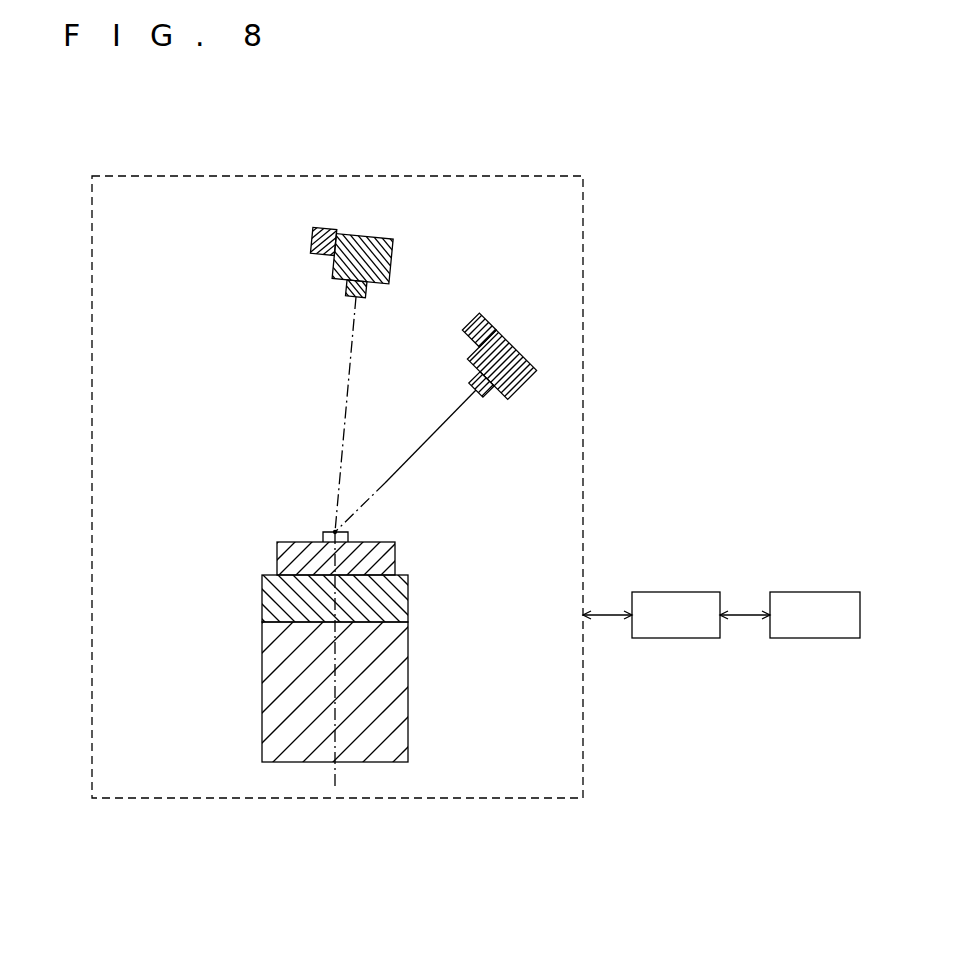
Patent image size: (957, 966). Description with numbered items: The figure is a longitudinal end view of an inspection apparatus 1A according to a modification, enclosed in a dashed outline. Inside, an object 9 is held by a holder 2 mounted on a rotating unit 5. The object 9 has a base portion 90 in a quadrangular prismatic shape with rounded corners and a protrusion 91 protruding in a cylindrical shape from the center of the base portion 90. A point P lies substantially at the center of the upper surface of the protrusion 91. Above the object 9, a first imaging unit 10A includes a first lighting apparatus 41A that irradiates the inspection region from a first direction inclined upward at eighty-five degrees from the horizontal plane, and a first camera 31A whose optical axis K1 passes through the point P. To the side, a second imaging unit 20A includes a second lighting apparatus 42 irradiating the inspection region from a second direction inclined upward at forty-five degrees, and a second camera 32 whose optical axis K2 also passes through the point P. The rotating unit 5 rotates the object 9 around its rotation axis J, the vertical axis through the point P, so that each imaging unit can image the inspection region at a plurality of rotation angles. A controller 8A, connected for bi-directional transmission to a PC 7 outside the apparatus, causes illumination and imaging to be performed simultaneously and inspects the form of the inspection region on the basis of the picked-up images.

The inspection apparatus 1A is at (740, 208).
The first imaging unit 10A is at (389, 252).
The first lighting apparatus 41A is at (323, 241).
The first camera 31A is at (318, 232).
The second imaging unit 20A is at (501, 363).
The second lighting apparatus 42 is at (483, 313).
The second camera 32 is at (511, 402).
The optical axis K1 is at (355, 353).
The optical axis K2 is at (453, 421).
The object 9 is at (326, 539).
The base portion 90 is at (395, 548).
The protrusion 91 is at (348, 535).
The point P is at (333, 530).
The holder 2 is at (262, 598).
The rotating unit 5 is at (262, 698).
The rotation axis J is at (337, 779).
The controller 8A is at (676, 639).
The PC 7 is at (813, 639).